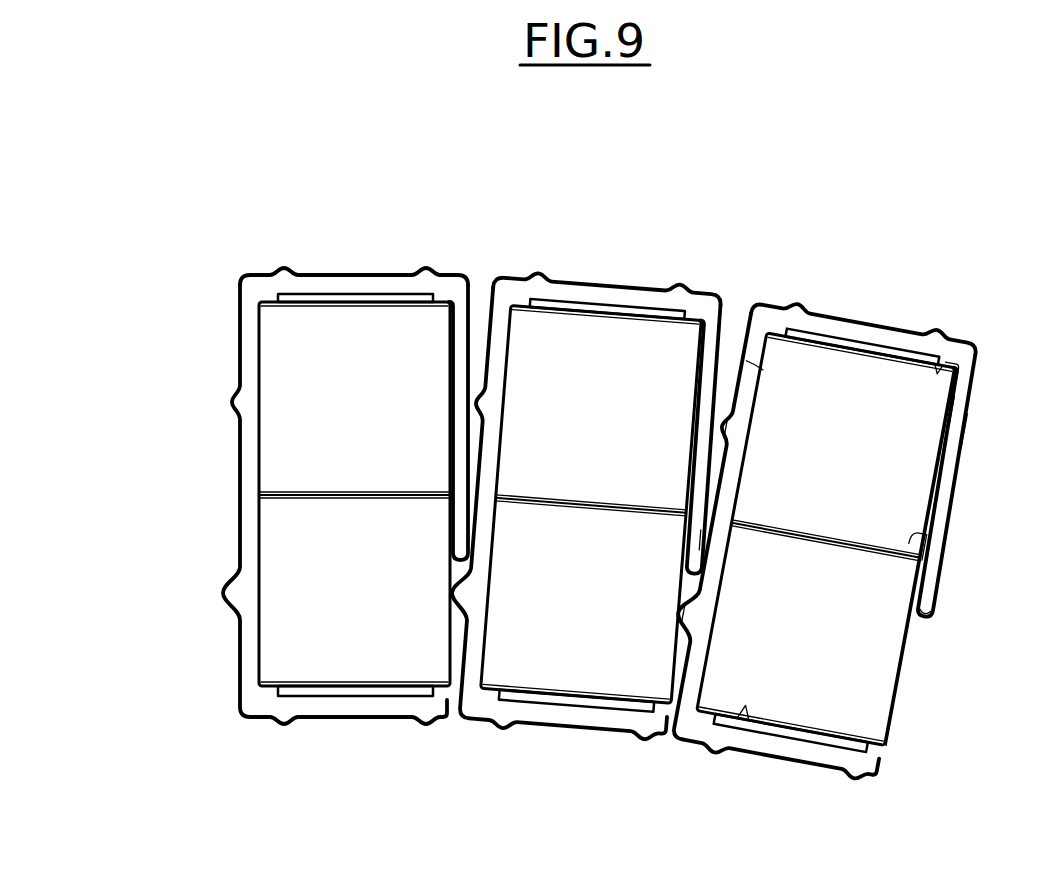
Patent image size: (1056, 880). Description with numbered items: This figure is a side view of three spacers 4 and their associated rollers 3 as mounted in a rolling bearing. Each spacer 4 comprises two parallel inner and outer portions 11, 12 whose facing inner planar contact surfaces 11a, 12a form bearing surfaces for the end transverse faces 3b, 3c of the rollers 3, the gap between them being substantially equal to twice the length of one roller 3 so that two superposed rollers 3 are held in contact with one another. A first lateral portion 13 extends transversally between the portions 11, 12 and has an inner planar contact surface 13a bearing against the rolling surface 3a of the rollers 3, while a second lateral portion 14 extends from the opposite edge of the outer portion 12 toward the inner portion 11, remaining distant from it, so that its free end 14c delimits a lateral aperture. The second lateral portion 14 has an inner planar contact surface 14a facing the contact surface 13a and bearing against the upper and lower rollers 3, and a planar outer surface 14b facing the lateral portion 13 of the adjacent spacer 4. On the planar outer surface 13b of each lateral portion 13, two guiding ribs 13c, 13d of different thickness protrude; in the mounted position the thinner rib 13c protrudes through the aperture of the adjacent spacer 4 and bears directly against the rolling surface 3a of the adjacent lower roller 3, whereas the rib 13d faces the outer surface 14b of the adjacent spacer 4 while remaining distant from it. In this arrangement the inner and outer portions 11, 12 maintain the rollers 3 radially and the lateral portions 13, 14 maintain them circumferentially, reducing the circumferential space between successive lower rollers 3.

The roller 3 is at (347, 411).
The exterior rolling surface 3a is at (947, 463).
The end transverse face 3b is at (879, 556).
The end transverse face 3c is at (943, 358).
The spacer 4 is at (410, 247).
The inner portion 11 is at (357, 721).
The inner planar contact surface 11a is at (745, 706).
The outer portion 12 is at (355, 276).
The inner planar contact surface 12a is at (925, 364).
The lateral portion 13 is at (237, 437).
The inner planar contact surface 13a is at (763, 370).
The planar outer surface 13b is at (703, 540).
The guiding rib 13c is at (700, 614).
The guiding rib 13d is at (702, 448).
The second lateral portion 14 is at (957, 503).
The inner planar contact surface 14a is at (945, 400).
The planar outer surface 14b is at (967, 433).
The free end 14c is at (923, 619).